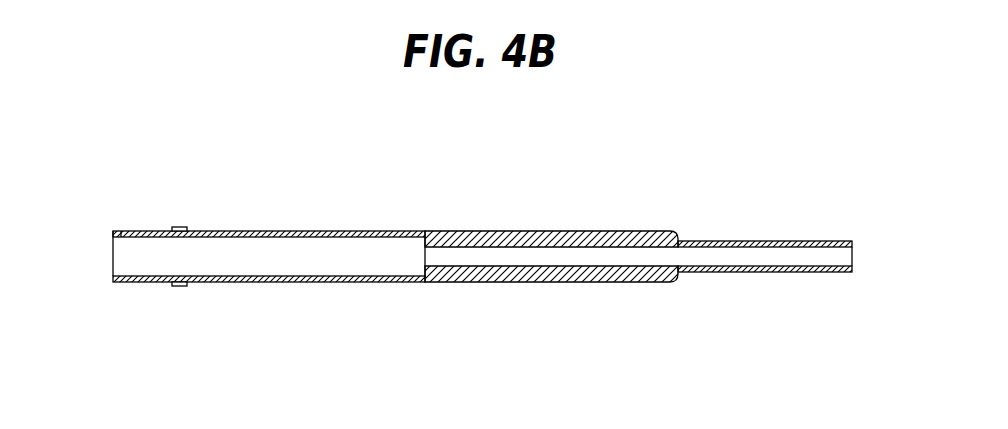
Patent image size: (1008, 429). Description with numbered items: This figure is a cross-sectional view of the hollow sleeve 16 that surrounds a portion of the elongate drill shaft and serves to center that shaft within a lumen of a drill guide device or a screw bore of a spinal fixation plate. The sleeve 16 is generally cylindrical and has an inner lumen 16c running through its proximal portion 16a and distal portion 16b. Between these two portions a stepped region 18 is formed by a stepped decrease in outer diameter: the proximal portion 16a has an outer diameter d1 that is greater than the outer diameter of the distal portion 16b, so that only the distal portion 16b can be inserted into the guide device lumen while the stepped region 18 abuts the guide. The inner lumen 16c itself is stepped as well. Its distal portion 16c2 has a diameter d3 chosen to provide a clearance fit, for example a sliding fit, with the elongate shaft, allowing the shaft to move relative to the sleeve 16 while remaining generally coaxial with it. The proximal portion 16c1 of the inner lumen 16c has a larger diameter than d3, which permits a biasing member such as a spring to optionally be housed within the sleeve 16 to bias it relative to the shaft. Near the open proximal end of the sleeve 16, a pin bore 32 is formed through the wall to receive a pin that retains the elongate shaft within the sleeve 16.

The hollow sleeve 16 is at (456, 229).
The proximal portion 16a is at (667, 207).
The distal portion 16b is at (852, 227).
The inner lumen 16c is at (136, 256).
The proximal portion of the inner lumen 16c1 is at (356, 257).
The distal portion of the inner lumen 16c2 is at (614, 256).
The stepped region 18 is at (683, 283).
The pin bore 32 is at (121, 231).
The outer diameter of the proximal portion d1 is at (284, 238).
The diameter of the distal portion of the inner lumen d3 is at (531, 253).